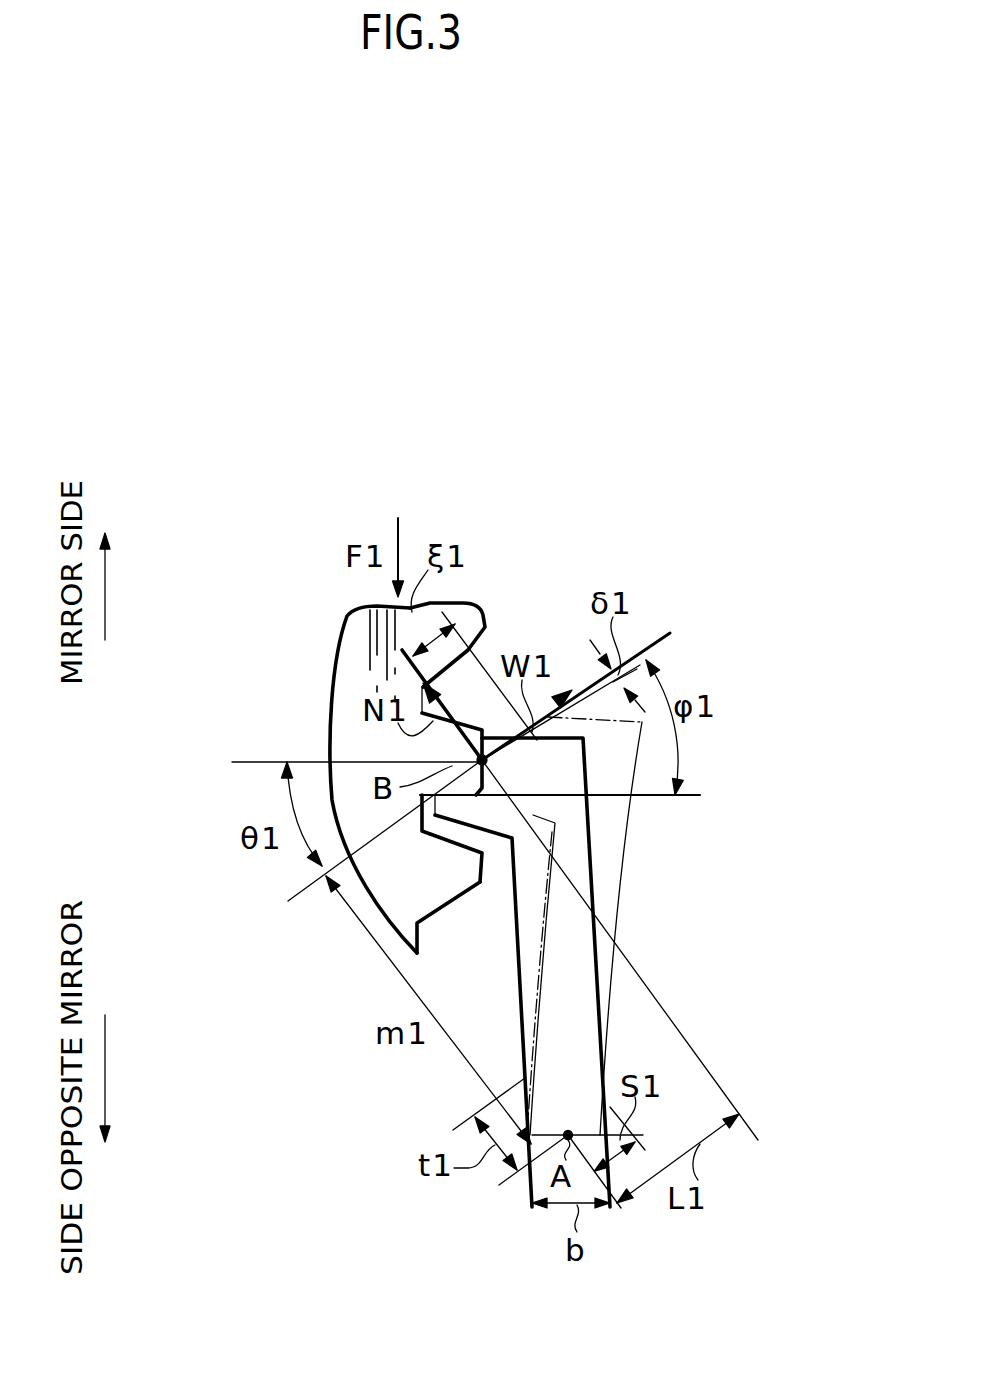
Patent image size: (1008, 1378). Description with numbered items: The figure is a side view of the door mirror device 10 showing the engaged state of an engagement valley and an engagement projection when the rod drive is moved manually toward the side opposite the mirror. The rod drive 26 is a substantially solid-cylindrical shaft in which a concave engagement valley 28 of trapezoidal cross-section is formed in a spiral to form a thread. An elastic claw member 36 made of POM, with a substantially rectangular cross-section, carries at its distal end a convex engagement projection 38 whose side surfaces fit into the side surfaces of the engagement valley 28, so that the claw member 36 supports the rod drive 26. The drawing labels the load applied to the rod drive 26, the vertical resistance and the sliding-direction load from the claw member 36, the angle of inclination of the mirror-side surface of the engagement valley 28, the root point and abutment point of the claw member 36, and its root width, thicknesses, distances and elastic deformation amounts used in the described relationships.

The clamp member 10 is at (468, 340).
The rod drive 26 is at (337, 624).
The engagement valley 28 is at (478, 888).
The claw member 36 is at (606, 857).
The engagement projection 38 is at (447, 821).